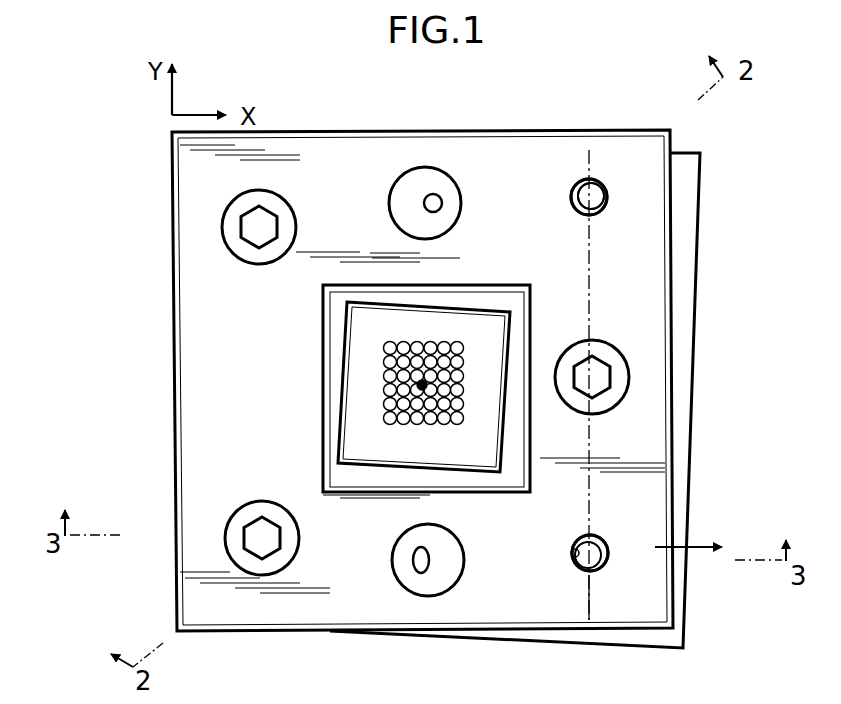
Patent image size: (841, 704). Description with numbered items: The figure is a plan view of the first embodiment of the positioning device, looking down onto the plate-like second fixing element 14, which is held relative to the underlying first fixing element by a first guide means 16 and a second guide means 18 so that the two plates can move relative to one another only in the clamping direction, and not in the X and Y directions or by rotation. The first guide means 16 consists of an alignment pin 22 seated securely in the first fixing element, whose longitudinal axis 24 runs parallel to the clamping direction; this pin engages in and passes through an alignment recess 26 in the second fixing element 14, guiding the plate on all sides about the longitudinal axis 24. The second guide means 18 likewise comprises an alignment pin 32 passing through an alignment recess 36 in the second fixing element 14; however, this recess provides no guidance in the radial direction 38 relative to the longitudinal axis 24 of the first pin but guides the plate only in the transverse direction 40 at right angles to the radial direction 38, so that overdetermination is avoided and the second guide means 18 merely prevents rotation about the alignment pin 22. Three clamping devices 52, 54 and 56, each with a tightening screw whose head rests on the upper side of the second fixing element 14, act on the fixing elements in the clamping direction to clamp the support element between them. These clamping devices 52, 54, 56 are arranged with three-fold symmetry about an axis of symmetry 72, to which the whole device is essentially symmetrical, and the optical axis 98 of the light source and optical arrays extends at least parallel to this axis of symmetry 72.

The second fixing element 14 is at (614, 230).
The first guide means 16 is at (610, 170).
The second guide means 18 is at (620, 567).
The alignment pin 22 is at (607, 187).
The longitudinal axis 24 is at (572, 196).
The alignment recess 26 is at (578, 182).
The alignment pin 32 is at (600, 534).
The alignment recess 36 is at (572, 548).
The radial direction 38 is at (592, 597).
The transverse direction 40 is at (700, 543).
The clamping device 52 is at (640, 376).
The clamping device 54 is at (296, 569).
The clamping device 56 is at (214, 239).
The axis of symmetry 72 is at (422, 385).
The optical axis 98 is at (422, 385).